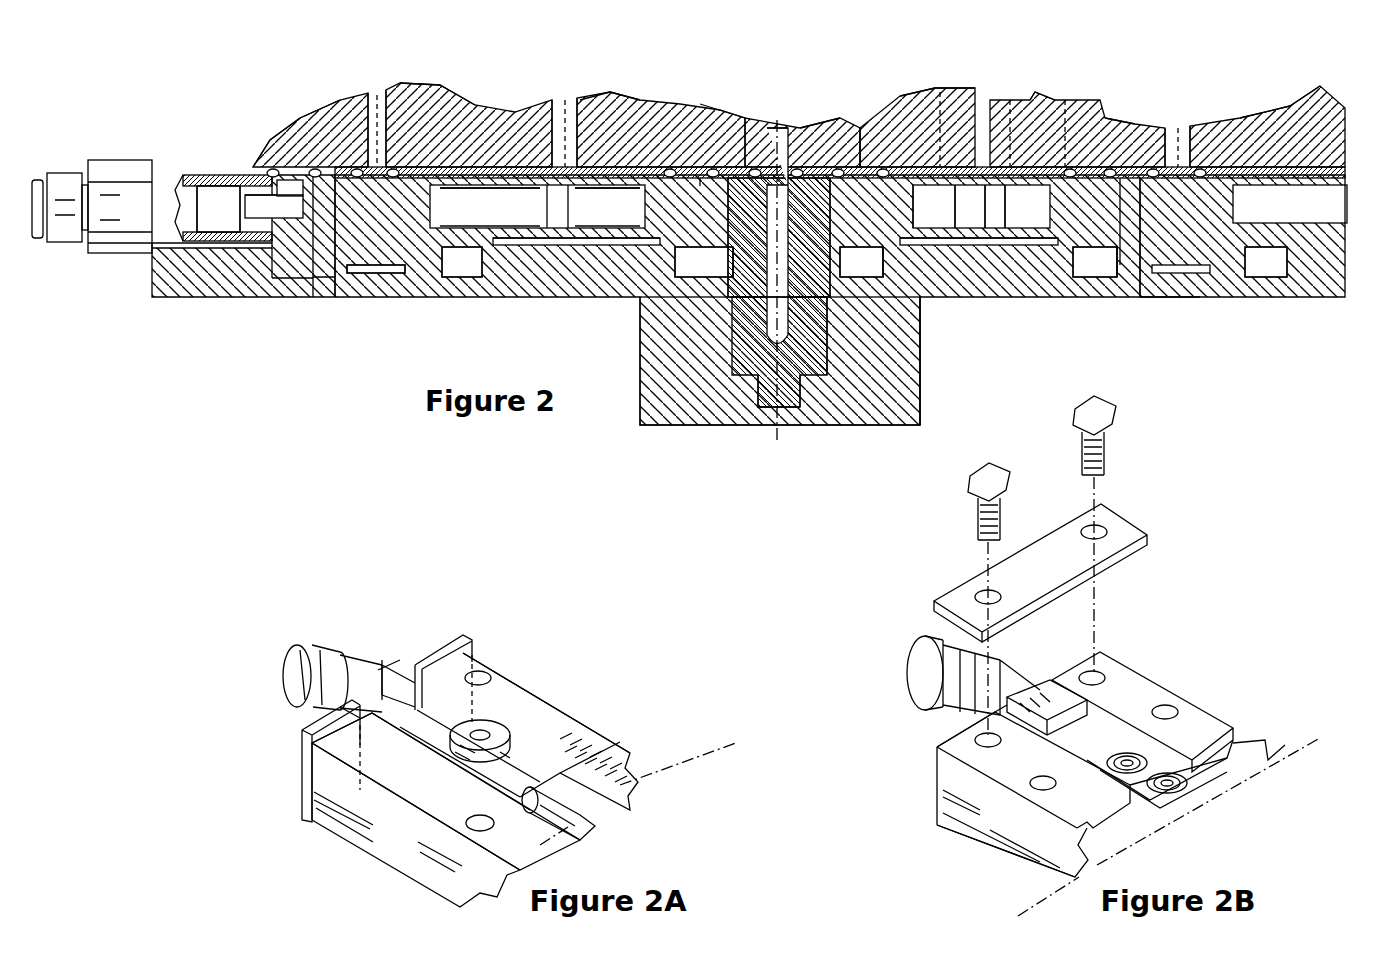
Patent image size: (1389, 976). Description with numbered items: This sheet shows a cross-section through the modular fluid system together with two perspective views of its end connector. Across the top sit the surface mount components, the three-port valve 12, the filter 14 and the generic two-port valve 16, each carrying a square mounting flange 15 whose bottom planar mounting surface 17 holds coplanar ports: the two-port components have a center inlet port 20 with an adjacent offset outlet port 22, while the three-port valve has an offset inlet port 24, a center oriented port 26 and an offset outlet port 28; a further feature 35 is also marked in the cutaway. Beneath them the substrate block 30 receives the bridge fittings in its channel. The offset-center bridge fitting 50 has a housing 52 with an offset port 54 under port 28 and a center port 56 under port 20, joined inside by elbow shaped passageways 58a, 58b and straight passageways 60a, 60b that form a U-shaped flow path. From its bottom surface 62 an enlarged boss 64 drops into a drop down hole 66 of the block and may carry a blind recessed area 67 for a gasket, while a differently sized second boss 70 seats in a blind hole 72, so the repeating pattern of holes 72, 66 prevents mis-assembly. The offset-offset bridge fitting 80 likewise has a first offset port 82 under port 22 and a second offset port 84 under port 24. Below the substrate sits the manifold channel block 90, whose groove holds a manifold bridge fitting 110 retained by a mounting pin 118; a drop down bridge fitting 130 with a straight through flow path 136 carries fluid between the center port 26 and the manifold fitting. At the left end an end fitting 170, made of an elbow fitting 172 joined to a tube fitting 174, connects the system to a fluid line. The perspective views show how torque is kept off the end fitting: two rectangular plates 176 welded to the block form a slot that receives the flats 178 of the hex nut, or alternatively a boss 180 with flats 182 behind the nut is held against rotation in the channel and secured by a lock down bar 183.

In FIG. 2, the valve 12 is at (912, 108).
In FIG. 2, the filter 14 is at (1320, 122).
In FIG. 2, the mounting flange 15 is at (475, 110).
In FIG. 2, the two-port valve 16 is at (278, 100).
In FIG. 2, the bottom planar mounting surface 17 is at (560, 140).
In FIG. 2, the inlet port 20 is at (376, 95).
In FIG. 2, the offset outlet port 22 is at (300, 125).
In FIG. 2, the inlet port 24 is at (830, 165).
In FIG. 2, the center oriented inlet (or outlet) port 26 is at (770, 140).
In FIG. 2, the offset outlet port 28 is at (720, 165).
In FIG. 2A, the substrate block 30 is at (590, 717).
In FIG. 2B, the substrate block 30 is at (1190, 720).
In FIG. 2, the port 35 is at (592, 130).
In FIG. 2, the offset-center bridge fitting 50 is at (520, 245).
In FIG. 2, the housing 52 is at (1025, 160).
In FIG. 2, the offset port 54 is at (640, 300).
In FIG. 2, the center port 56 is at (420, 160).
In FIG. 2, the elbow shaped internal fluid passageway 58a is at (890, 210).
In FIG. 2, the elbow shaped internal fluid passageway 58b is at (705, 180).
In FIG. 2, the straight flow passageway 60a is at (955, 185).
In FIG. 2, the straight flow passageway 60b is at (1015, 190).
In FIG. 2, the bottom surface 62 is at (450, 260).
In FIG. 2, the enlarged boss 64 is at (318, 290).
In FIG. 2, the drop down hole 66 is at (345, 297).
In FIG. 2, the blind recessed area 67 is at (372, 275).
In FIG. 2, the second boss 70 is at (680, 300).
In FIG. 2, the blind hole 72 is at (480, 262).
In FIG. 2, the offset-offset bridge fitting 80 is at (1022, 285).
In FIG. 2, the first offset port 82 is at (1150, 282).
In FIG. 2, the second offset port 84 is at (862, 150).
In FIG. 2, the manifold channel block 90 is at (905, 400).
In FIG. 2, the manifold bridge fitting 110 is at (762, 380).
In FIG. 2, the mounting pin 118 is at (792, 410).
In FIG. 2, the drop down bridge fitting 130 is at (778, 190).
In FIG. 2, the straight through flow path 136 is at (825, 350).
In FIG. 2, the end fitting 170 is at (195, 183).
In FIG. 2A, the end fitting 170 is at (372, 650).
In FIG. 2B, the end fitting 170 is at (912, 635).
In FIG. 2, the elbow fitting 172 is at (250, 262).
In FIG. 2, the tube fitting 174 is at (40, 175).
In FIG. 2A, the tube fitting 174 is at (292, 678).
In FIG. 2B, the tube fitting 174 is at (908, 672).
In FIG. 2A, the rectangular plate 176 is at (448, 636).
In FIG. 2A, the flats 178 is at (388, 660).
In FIG. 2B, the boss 180 is at (1110, 690).
In FIG. 2B, the flats 182 is at (1042, 700).
In FIG. 2B, the lock down bar 183 is at (1118, 520).